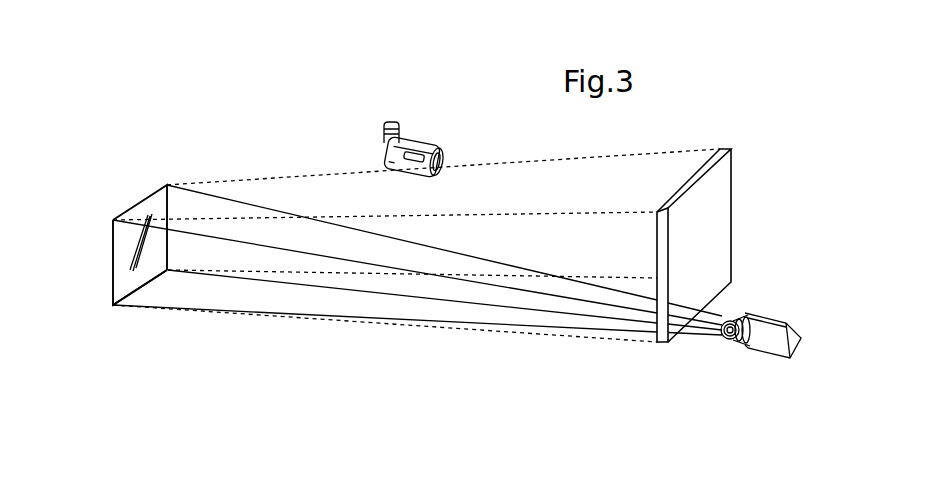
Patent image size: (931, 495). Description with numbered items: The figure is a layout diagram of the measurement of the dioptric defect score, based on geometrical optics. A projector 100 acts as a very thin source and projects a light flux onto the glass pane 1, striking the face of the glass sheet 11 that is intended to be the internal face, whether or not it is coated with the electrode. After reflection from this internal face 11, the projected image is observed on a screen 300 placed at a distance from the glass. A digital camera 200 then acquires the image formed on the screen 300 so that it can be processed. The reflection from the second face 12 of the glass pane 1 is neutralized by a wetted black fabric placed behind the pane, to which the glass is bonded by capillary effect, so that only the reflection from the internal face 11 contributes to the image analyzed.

The glass pane 1 is at (143, 190).
The internal face of the glass sheet 11 is at (127, 283).
The second face 12 is at (113, 237).
The projector 100 is at (761, 323).
The digital camera 200 is at (410, 135).
The screen 300 is at (727, 172).